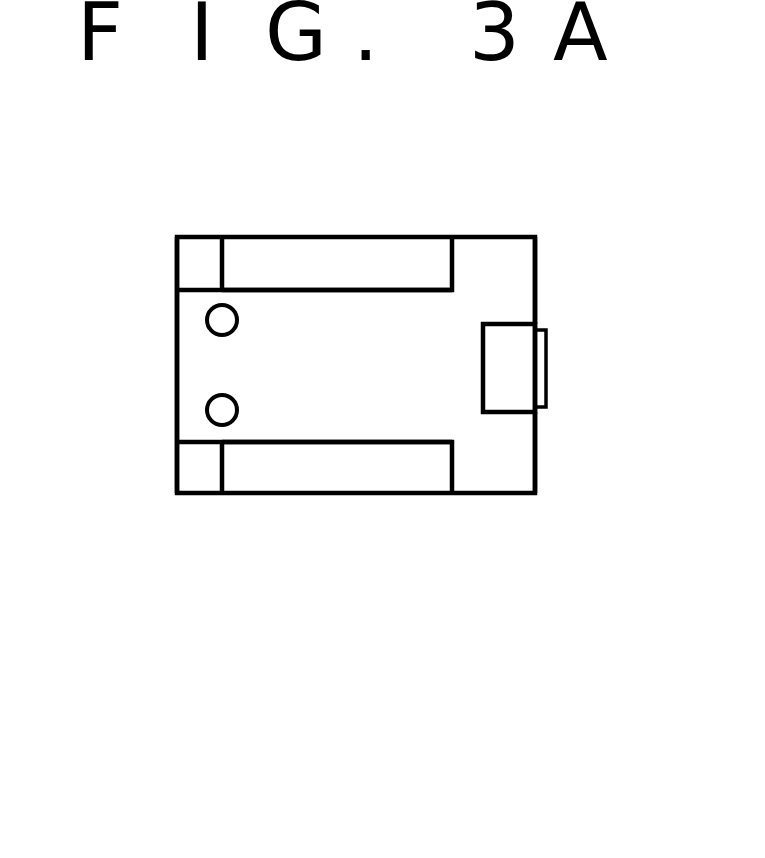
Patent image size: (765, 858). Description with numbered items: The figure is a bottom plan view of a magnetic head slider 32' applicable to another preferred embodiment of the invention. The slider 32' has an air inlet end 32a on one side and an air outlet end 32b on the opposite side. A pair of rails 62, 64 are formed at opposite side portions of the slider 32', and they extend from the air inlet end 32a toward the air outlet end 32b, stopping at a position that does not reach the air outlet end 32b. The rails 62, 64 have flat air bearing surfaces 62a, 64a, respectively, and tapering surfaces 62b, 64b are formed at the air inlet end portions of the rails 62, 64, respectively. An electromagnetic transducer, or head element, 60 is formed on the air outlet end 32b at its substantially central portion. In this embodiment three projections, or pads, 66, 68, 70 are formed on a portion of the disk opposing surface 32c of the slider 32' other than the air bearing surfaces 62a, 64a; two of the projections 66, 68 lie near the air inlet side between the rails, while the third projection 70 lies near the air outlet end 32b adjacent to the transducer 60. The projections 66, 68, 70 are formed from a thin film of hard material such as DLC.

The magnetic head slider 32' is at (385, 331).
The air inlet end 32a is at (176, 372).
The air outlet end 32b is at (533, 271).
The disk opposing surface 32c is at (533, 475).
The rail 62 is at (413, 237).
The air bearing surface 62a is at (345, 265).
The tapering surface 62b is at (178, 263).
The rail 64 is at (419, 497).
The air bearing surface 64a is at (342, 481).
The tapering surface 64b is at (178, 468).
The projection 66 is at (238, 306).
The projection 68 is at (235, 424).
The projection 70 is at (528, 343).
The electromagnetic transducer 60 is at (547, 385).